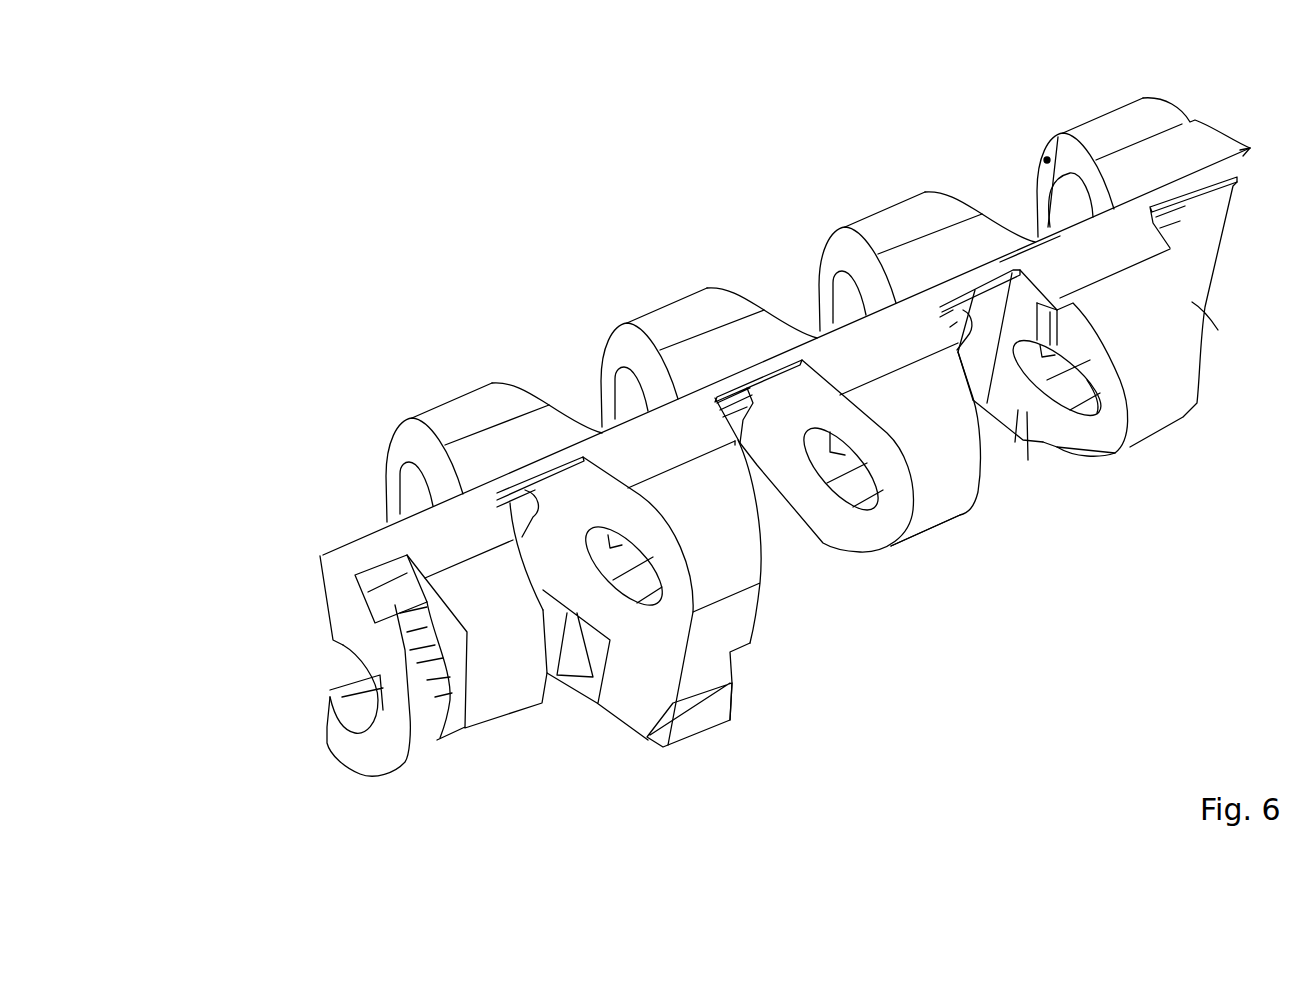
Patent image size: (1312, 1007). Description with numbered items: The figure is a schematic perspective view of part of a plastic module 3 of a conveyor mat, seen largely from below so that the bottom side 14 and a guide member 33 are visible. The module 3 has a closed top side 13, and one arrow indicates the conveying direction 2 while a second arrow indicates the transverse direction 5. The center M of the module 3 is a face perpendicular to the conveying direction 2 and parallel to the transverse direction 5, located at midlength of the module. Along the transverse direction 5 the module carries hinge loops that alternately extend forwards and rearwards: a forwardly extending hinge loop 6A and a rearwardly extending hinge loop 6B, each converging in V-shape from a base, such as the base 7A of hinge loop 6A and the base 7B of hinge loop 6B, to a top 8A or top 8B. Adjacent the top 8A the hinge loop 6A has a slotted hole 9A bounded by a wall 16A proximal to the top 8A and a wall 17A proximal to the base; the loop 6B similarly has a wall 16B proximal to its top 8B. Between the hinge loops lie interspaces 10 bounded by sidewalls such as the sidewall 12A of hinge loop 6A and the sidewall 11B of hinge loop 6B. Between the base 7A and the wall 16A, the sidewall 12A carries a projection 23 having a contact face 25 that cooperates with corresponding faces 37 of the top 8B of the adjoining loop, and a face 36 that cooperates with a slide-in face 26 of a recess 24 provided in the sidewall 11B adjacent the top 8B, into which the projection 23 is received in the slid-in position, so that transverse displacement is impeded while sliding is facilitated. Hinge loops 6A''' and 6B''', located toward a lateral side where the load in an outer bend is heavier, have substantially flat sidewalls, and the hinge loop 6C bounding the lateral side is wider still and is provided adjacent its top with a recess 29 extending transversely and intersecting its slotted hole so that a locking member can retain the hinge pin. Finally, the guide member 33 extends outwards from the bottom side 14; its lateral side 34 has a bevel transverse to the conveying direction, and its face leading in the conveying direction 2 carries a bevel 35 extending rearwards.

The conveying direction 2 is at (855, 638).
The plastic module 3 is at (248, 805).
The transverse direction 5 is at (477, 217).
The interspace 10 is at (803, 290).
The center of the module M is at (323, 555).
The top side 13 is at (757, 340).
The bottom side 14 is at (567, 610).
The forwardly extending hinge loop 6A is at (1103, 491).
The hinge loop with flat sidewalls 6A''' is at (925, 562).
The rearwardly extending hinge loop 6B is at (1143, 137).
The hinge loop with flat sidewalls 6B''' is at (682, 329).
The lateral hinge loop 6C is at (478, 707).
The base of hinge loop 7A is at (1040, 233).
The base of hinge loop 7B is at (1198, 167).
The top of hinge loop 8A is at (1163, 413).
The top of hinge loop 8B is at (1090, 117).
The slotted hole 9A is at (1090, 398).
The sidewall of hinge loop 11B is at (868, 262).
The sidewall of hinge loop 12A is at (808, 510).
The wall of slotted hole proximal to the top 16A is at (1100, 403).
The wall of slotted hole proximal to the top 16B is at (843, 268).
The wall of slotted hole proximal to the base 17A is at (1015, 347).
The projection 23 is at (1061, 303).
The recess 24 is at (1086, 168).
The contact face 25 is at (1023, 442).
The slide-in face 26 is at (1062, 137).
The recess 29 is at (405, 618).
The guide member 33 is at (725, 638).
The lateral side of guide member 34 is at (750, 677).
The bevel 35 is at (698, 707).
The corresponding face of projection 36 is at (1000, 413).
The corresponding face of top 37 is at (1043, 160).